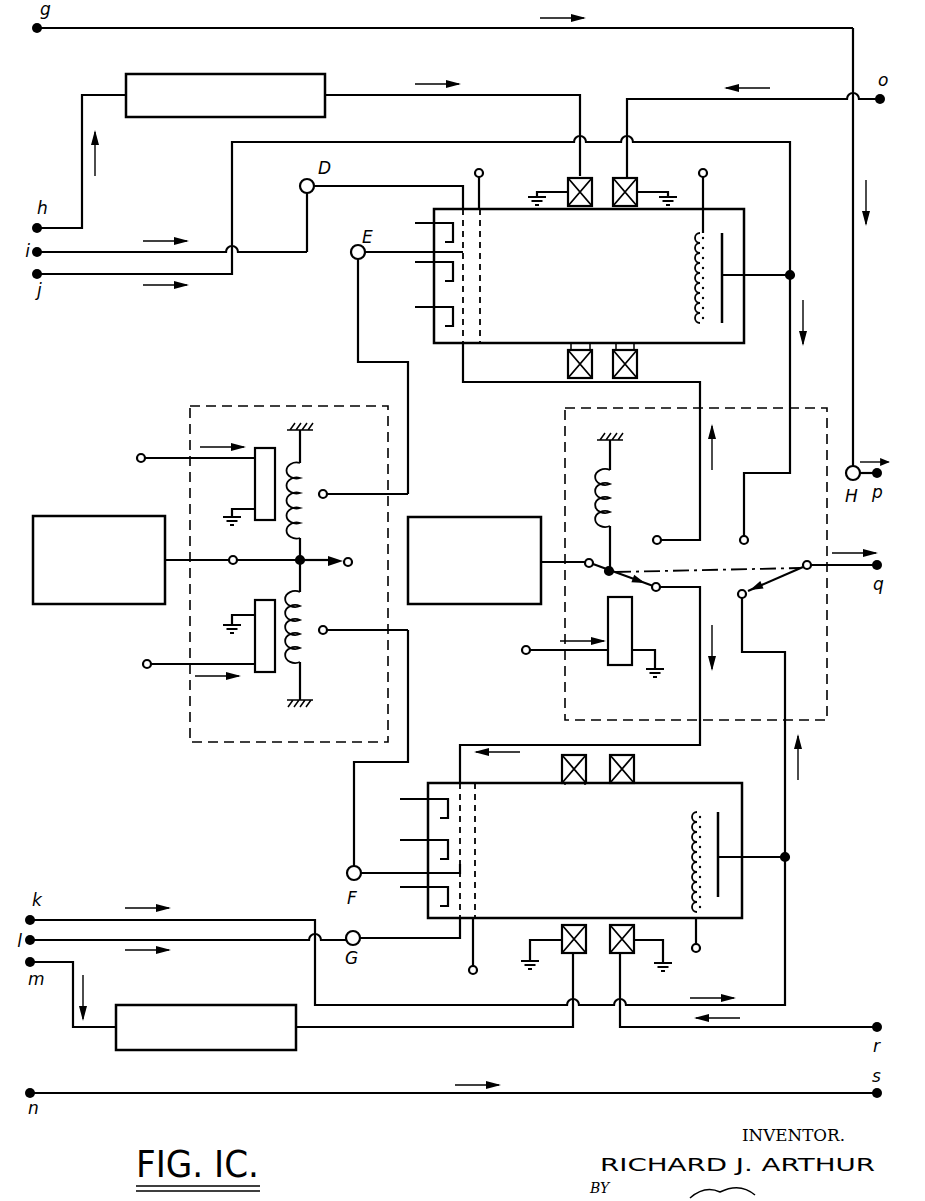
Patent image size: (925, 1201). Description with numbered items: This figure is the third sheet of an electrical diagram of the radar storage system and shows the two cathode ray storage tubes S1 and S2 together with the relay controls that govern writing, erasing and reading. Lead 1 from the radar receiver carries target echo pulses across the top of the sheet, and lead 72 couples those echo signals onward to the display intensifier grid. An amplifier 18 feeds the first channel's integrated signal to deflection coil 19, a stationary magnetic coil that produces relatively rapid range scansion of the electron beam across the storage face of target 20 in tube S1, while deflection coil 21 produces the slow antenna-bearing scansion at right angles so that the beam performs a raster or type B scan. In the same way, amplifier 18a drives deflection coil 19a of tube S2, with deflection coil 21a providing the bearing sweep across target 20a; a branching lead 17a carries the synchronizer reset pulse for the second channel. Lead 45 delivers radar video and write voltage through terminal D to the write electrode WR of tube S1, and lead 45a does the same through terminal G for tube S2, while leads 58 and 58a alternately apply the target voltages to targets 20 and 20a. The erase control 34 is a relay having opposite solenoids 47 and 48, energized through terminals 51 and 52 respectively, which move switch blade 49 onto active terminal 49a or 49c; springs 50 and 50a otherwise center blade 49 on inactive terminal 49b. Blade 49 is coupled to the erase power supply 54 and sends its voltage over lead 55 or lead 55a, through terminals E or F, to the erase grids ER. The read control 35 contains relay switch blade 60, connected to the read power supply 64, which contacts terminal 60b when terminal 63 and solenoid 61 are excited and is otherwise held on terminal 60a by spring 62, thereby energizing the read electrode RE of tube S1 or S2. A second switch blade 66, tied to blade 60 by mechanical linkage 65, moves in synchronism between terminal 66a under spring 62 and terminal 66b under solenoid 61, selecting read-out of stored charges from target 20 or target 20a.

The lead 1 is at (410, 28).
The amplifier 18 is at (258, 74).
The lead 58 is at (110, 276).
The lead 45 is at (128, 252).
The deflection coil 19 is at (567, 177).
The deflection coil 21 is at (634, 177).
The target 20 is at (723, 243).
The lead 72 is at (852, 293).
The lead 55 is at (358, 318).
The erase control 34 is at (279, 407).
The read control 35 is at (746, 409).
The terminal 51 is at (145, 452).
The solenoid 47 is at (255, 490).
The solenoid 48 is at (259, 600).
The terminal 52 is at (143, 668).
The spring 50 is at (303, 452).
The spring 50a is at (306, 658).
The switch blade 49 is at (317, 556).
The active terminal 49a is at (325, 490).
The inactive terminal 49b is at (349, 567).
The active terminal 49c is at (326, 634).
The erase power supply 54 is at (64, 516).
The read power supply 64 is at (503, 517).
The spring 62 is at (614, 492).
The relay switch blade 60 is at (625, 576).
The terminal 60a is at (674, 516).
The terminal 60b is at (658, 610).
The solenoid 61 is at (614, 666).
The terminal 63 is at (526, 646).
The mechanical linkage 65 is at (720, 568).
The switch blade 66 is at (781, 581).
The terminal 66a is at (746, 534).
The terminal 66b is at (748, 600).
The cathode ray storage tube S1 is at (536, 346).
The cathode ray storage tube S2 is at (527, 780).
The target 20a is at (720, 830).
The deflection coil 21a is at (635, 765).
The deflection coil 19a is at (562, 928).
The lead 55a is at (352, 820).
The lead 58a is at (240, 919).
The lead 45a is at (246, 942).
The amplifier 18a is at (222, 1050).
The branching lead 17a is at (420, 1095).